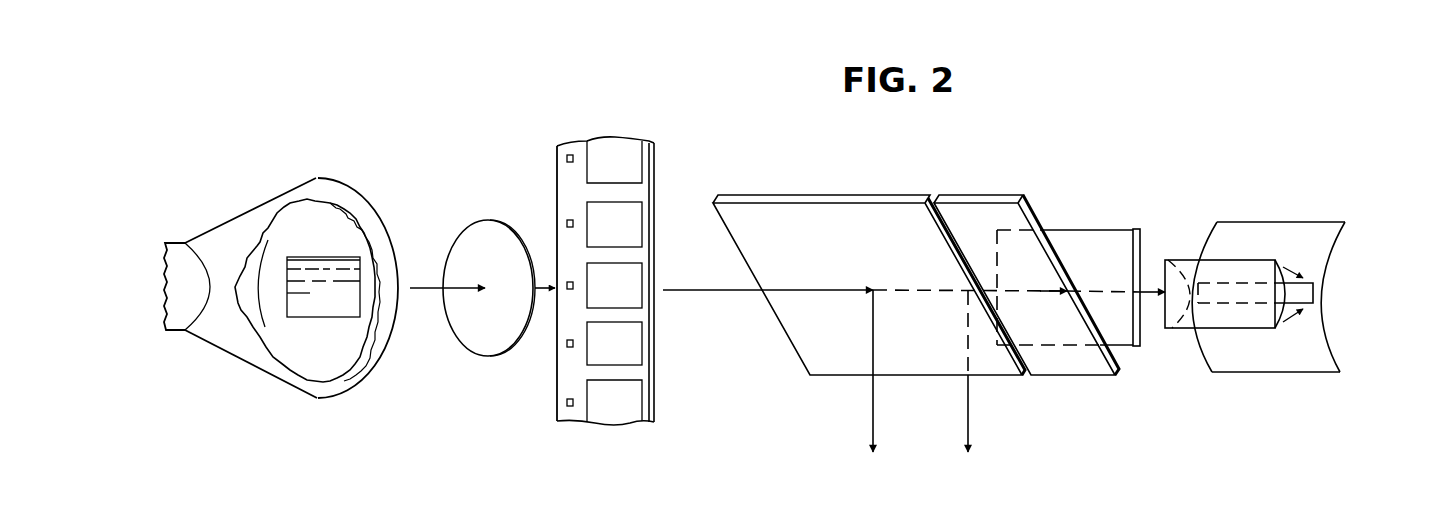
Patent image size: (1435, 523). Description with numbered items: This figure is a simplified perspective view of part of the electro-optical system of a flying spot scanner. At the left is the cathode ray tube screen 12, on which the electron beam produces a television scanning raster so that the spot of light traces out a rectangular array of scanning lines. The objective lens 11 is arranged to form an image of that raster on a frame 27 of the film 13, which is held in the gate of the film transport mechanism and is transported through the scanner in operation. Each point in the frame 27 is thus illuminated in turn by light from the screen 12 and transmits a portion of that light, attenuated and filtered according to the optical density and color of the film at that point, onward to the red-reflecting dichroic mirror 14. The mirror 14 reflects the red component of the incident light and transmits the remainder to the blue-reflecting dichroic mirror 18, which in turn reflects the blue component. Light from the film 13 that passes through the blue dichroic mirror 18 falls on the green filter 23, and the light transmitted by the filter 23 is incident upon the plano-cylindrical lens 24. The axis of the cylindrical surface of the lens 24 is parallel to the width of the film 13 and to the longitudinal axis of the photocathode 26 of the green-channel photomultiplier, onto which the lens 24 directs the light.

The objective lens 11 is at (479, 232).
The cathode ray tube screen 12 is at (331, 354).
The film 13 is at (557, 152).
The red-reflecting dichroic mirror 14 is at (757, 197).
The blue-reflecting dichroic mirror 18 is at (977, 197).
The green filter 23 is at (1097, 229).
The plano-cylindrical lens 24 is at (1182, 259).
The photocathode 26 is at (1330, 238).
The frame 27 is at (630, 287).